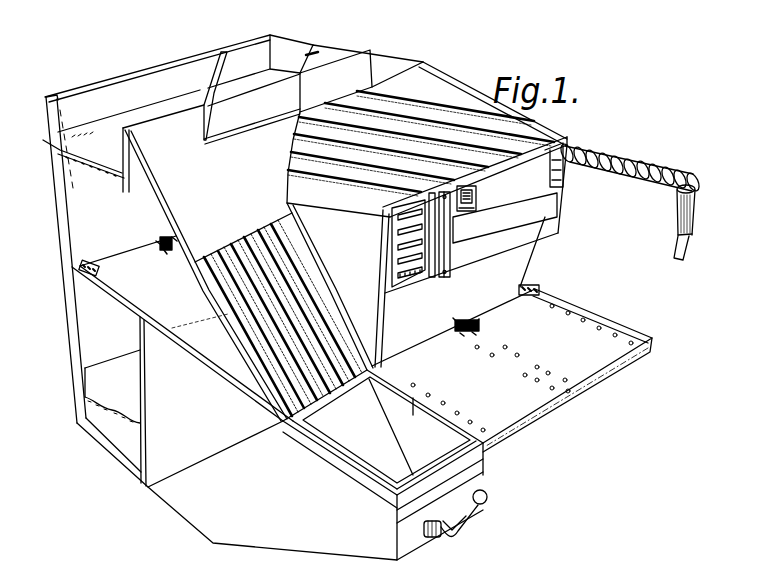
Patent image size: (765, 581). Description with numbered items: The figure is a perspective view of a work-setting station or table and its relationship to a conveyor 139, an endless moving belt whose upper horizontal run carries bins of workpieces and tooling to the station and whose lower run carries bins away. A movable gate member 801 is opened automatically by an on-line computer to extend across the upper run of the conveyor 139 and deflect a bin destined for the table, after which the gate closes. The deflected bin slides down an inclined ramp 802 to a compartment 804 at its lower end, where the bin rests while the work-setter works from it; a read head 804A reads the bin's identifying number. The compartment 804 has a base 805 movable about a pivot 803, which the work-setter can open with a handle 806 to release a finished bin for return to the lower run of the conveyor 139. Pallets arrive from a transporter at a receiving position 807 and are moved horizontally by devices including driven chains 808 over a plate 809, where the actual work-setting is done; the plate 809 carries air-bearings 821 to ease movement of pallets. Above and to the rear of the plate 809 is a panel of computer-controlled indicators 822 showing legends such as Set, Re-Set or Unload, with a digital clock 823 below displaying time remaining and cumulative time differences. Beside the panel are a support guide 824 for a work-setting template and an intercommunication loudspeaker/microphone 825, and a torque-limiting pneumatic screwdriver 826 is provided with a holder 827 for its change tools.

The conveyor 139 is at (97, 137).
The gate member 801 is at (213, 96).
The inclined ramp 802 is at (265, 345).
The pivot 803 is at (313, 520).
The compartment 804 is at (433, 454).
The read head 804A is at (402, 395).
The base 805 is at (365, 447).
The handle 806 is at (486, 513).
The receiving position 807 is at (182, 312).
The driven chains 808 is at (92, 268).
The plate 809 is at (518, 404).
The air-bearings 821 is at (505, 364).
The indicators 822 is at (402, 247).
The digital clock 823 is at (400, 277).
The support guide 824 is at (442, 248).
The intercommunication loudspeaker/microphone 825 is at (470, 198).
The torque-limiting pneumatic screwdriver 826 is at (672, 225).
The holder 827 is at (547, 183).